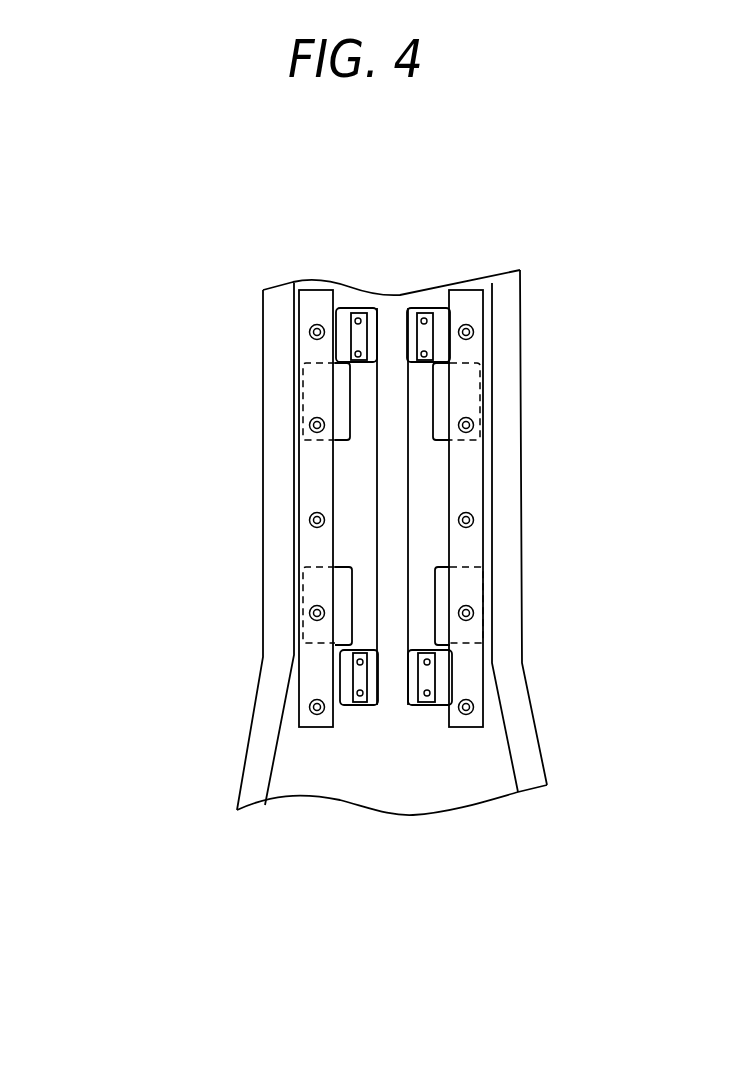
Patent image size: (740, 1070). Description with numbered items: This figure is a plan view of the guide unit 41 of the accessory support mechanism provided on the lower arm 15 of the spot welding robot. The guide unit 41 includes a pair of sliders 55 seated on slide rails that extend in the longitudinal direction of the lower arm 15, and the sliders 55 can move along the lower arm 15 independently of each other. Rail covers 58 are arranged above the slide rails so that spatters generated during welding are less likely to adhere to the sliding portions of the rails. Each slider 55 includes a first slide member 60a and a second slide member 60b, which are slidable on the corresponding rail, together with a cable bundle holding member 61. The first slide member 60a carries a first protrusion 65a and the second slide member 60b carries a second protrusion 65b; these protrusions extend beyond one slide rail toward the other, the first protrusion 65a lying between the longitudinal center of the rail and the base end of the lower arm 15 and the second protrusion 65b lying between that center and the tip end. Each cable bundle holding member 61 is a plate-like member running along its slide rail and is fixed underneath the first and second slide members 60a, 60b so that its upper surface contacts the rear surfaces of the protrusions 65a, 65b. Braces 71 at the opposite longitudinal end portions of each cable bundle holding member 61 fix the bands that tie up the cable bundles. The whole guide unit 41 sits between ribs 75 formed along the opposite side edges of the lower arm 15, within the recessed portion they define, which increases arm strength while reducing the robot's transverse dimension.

The guide unit 41 is at (165, 351).
The lower arm 15 is at (483, 787).
The ribs 75 is at (263, 728).
The rail covers 58 is at (310, 351).
The sliders 55 is at (348, 541).
The cable bundle holding member 61 is at (355, 482).
The braces 71 is at (363, 332).
The first protrusion 65a is at (340, 597).
The second protrusion 65b is at (340, 402).
The first slide member 60a is at (303, 633).
The second slide member 60b is at (303, 413).